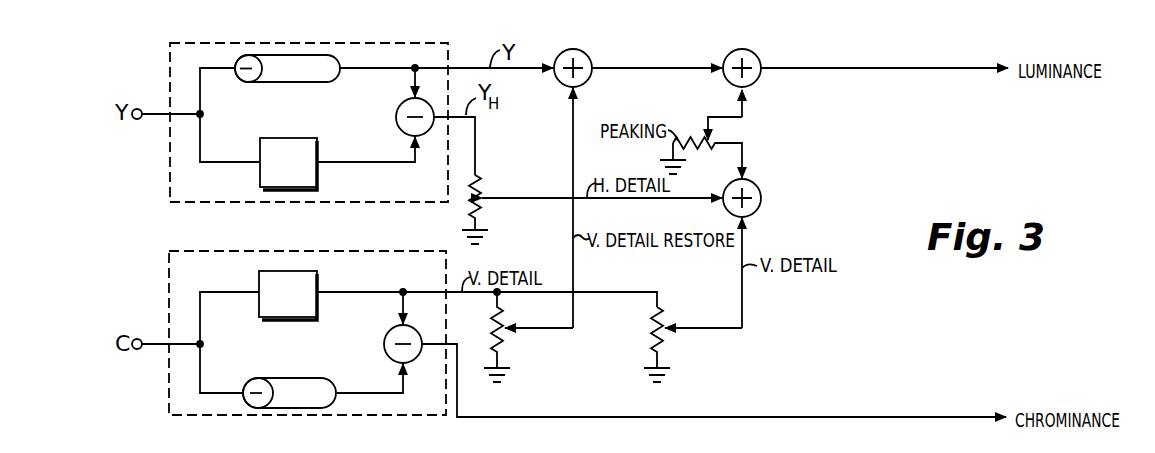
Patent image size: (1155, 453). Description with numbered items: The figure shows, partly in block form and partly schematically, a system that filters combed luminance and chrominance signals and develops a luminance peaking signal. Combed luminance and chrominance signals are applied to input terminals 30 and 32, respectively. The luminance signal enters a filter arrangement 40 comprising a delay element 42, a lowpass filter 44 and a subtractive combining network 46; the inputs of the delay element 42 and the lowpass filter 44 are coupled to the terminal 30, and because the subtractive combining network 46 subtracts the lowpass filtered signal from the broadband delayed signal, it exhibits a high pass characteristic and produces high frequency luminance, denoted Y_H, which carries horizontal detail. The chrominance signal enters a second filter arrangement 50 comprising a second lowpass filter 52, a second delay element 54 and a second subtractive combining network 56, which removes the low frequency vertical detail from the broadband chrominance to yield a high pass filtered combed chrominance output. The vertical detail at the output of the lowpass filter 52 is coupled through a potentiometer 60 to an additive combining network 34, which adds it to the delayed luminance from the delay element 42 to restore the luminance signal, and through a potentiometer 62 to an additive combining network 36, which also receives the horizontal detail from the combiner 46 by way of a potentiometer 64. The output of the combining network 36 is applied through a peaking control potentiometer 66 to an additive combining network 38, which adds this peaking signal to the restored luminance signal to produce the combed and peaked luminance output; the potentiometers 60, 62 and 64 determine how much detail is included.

The input terminal 30 is at (149, 100).
The input terminal 32 is at (141, 340).
The additive combining network 34 is at (592, 43).
The additive combining network 36 is at (756, 186).
The additive combining network 38 is at (761, 43).
The filter arrangement 40 is at (192, 43).
The delay element 42 is at (330, 83).
The lowpass filter 44 is at (263, 138).
The subtractive combining network 46 is at (398, 123).
The second filter arrangement 50 is at (188, 251).
The second lowpass filter 52 is at (265, 318).
The second delay element 54 is at (312, 378).
The second subtractive combining network 56 is at (394, 330).
The potentiometer 60 is at (492, 320).
The potentiometer 62 is at (664, 320).
The potentiometer 64 is at (478, 184).
The peaking control potentiometer 66 is at (708, 149).